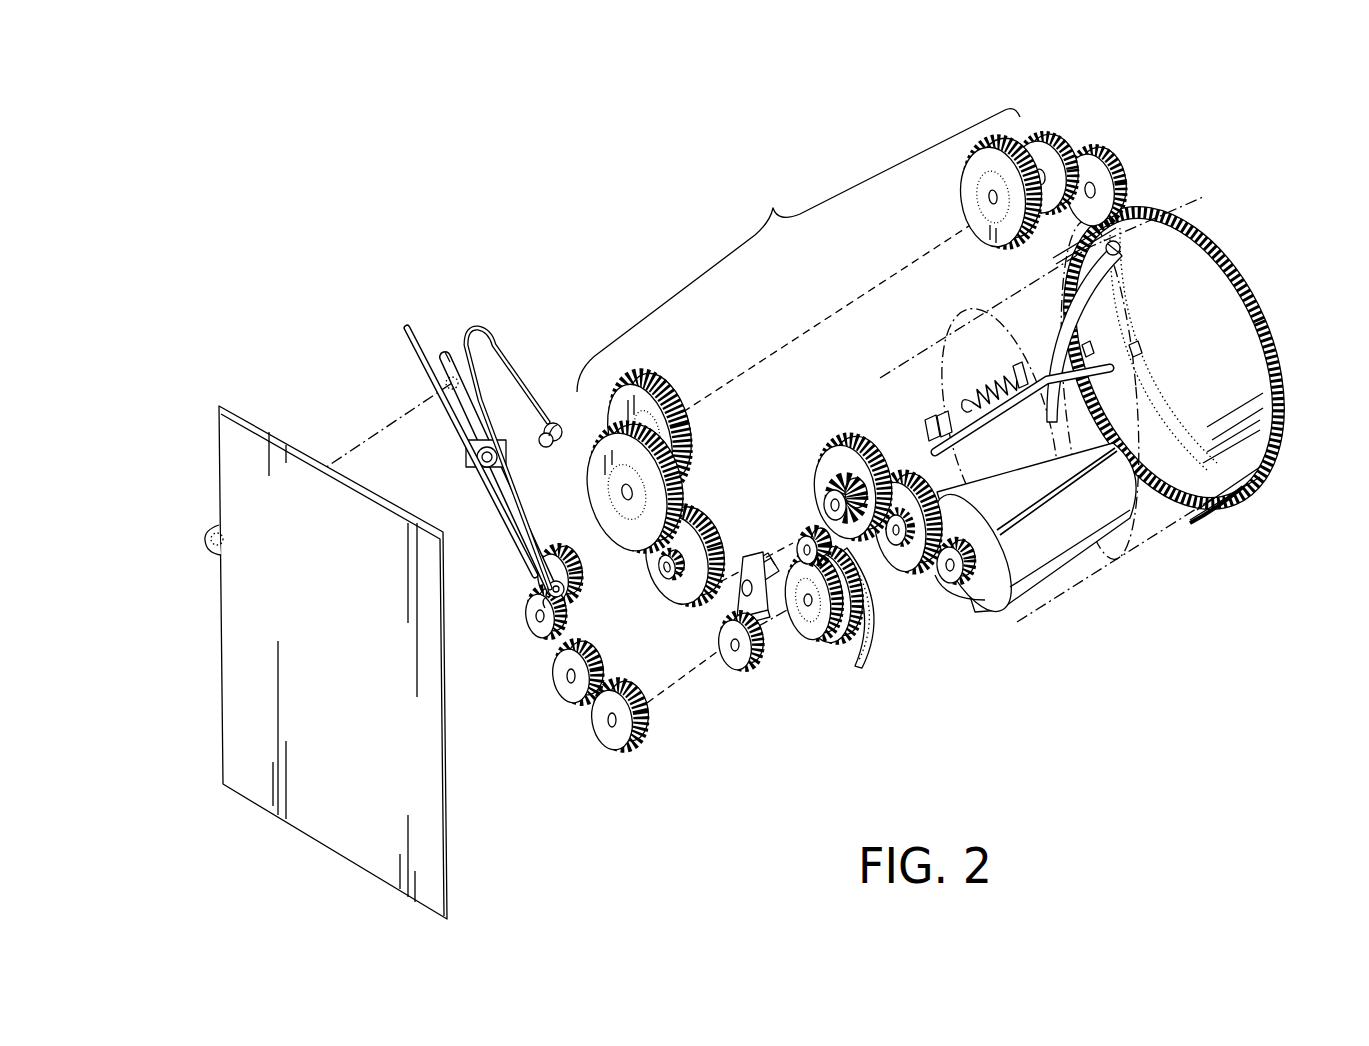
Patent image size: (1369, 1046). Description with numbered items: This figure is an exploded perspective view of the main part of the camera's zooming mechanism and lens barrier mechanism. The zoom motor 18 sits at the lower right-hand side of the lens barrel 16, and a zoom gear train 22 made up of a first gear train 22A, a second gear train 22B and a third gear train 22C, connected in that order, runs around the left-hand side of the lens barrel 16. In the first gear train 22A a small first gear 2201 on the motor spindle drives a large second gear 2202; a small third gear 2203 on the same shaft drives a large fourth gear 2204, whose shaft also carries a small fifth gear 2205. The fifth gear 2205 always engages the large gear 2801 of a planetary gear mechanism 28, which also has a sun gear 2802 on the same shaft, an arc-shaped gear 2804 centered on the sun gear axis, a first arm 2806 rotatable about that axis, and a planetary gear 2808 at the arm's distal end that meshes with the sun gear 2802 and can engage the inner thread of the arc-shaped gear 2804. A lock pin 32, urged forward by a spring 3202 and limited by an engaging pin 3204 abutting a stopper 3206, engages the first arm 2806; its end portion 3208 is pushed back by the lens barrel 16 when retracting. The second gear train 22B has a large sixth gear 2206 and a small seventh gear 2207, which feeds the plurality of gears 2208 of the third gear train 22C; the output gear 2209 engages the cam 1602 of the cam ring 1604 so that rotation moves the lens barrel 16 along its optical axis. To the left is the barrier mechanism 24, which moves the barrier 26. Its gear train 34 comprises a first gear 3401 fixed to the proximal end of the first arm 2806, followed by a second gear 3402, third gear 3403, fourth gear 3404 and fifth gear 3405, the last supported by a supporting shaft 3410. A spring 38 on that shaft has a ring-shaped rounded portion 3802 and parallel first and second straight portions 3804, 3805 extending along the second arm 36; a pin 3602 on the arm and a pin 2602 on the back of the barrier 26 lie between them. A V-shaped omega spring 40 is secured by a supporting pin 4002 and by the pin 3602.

The lens barrel 16 is at (1134, 370).
The cam 1602 is at (1290, 400).
The cam ring 1604 is at (1217, 310).
The zoom motor 18 is at (1040, 582).
The zoom gear train 22 is at (771, 200).
The first gear train 22A is at (900, 511).
The second gear train 22B is at (654, 497).
The third gear train 22C is at (1071, 136).
The first gear 2201 is at (978, 602).
The second gear 2202 is at (928, 590).
The third gear 2203 is at (930, 563).
The fourth gear 2204 is at (862, 466).
The fifth gear 2205 is at (826, 468).
The sixth gear 2206 is at (658, 579).
The seventh gear 2207 is at (663, 588).
The gears 2208 is at (946, 188).
The output gear 2209 is at (1098, 172).
The barrier mechanism 24 is at (618, 670).
The barrier 26 is at (326, 658).
The pin 2602 is at (226, 545).
The planetary gear mechanism 28 is at (825, 605).
The large gear 2801 is at (832, 660).
The sun gear 2802 is at (803, 572).
The arc-shaped gear 2804 is at (873, 630).
The first arm 2806 is at (743, 555).
The planetary gear 2808 is at (805, 537).
The lock pin 32 is at (983, 443).
The spring 3202 is at (1000, 378).
The engaging pin 3204 is at (945, 420).
The stopper 3206 is at (926, 420).
The end portion 3208 is at (1107, 376).
The gear train 34 is at (618, 670).
The first gear 3401 is at (732, 665).
The second gear 3402 is at (620, 747).
The third gear 3403 is at (556, 678).
The fourth gear 3404 is at (528, 619).
The fifth gear 3405 is at (583, 578).
The supporting shaft 3410 is at (540, 585).
The second arm 36 is at (504, 482).
The pin 3602 is at (478, 470).
The spring 38 is at (446, 427).
The rounded portion 3802 is at (570, 567).
The first straight portion 3804 is at (452, 418).
The second straight portion 3805 is at (448, 352).
The omega spring 40 is at (518, 450).
The supporting pin 4002 is at (554, 421).